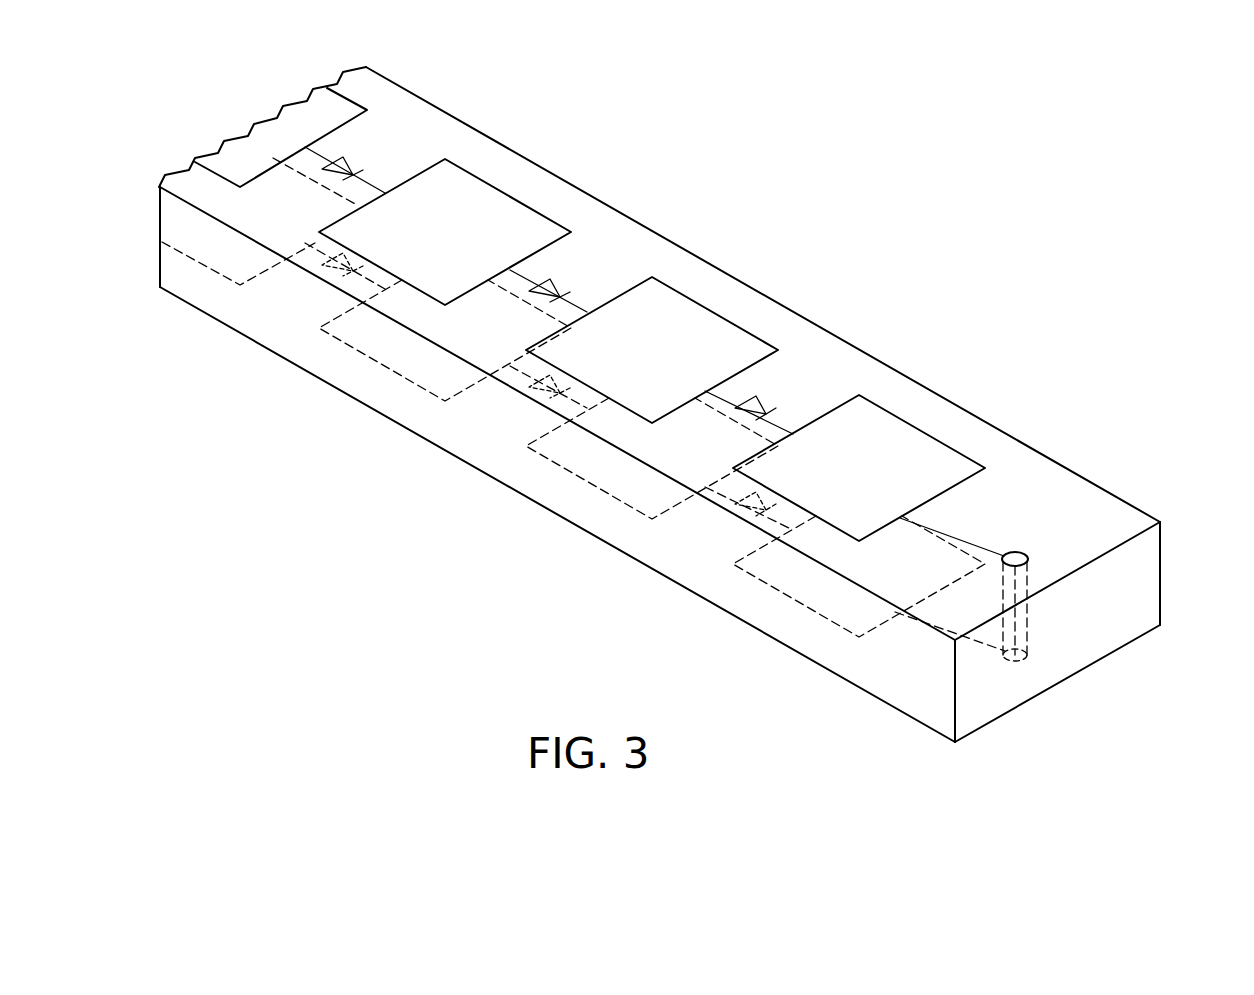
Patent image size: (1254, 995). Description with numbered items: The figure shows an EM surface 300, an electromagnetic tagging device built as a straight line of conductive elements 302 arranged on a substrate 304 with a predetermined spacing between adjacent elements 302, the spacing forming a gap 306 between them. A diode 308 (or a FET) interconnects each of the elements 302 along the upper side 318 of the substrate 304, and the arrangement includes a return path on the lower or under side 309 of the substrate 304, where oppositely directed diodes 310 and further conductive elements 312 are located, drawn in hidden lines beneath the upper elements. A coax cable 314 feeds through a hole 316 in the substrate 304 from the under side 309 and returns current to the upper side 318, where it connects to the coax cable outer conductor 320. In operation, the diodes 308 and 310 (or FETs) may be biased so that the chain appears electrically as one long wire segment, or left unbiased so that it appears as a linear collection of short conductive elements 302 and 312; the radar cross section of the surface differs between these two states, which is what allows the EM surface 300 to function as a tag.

The EM surface 300 is at (583, 353).
The conductive elements 302 is at (474, 244).
The substrate 304 is at (1161, 577).
The gap 306 is at (861, 395).
The diode 308 is at (560, 290).
The under side 309 is at (463, 462).
The oppositely directed diodes 310 is at (744, 514).
The elements 312 is at (183, 257).
The coax cable 314 is at (1021, 626).
The hole 316 is at (1028, 555).
The upper side 318 is at (1023, 467).
The coax cable outer conductor 320 is at (967, 525).